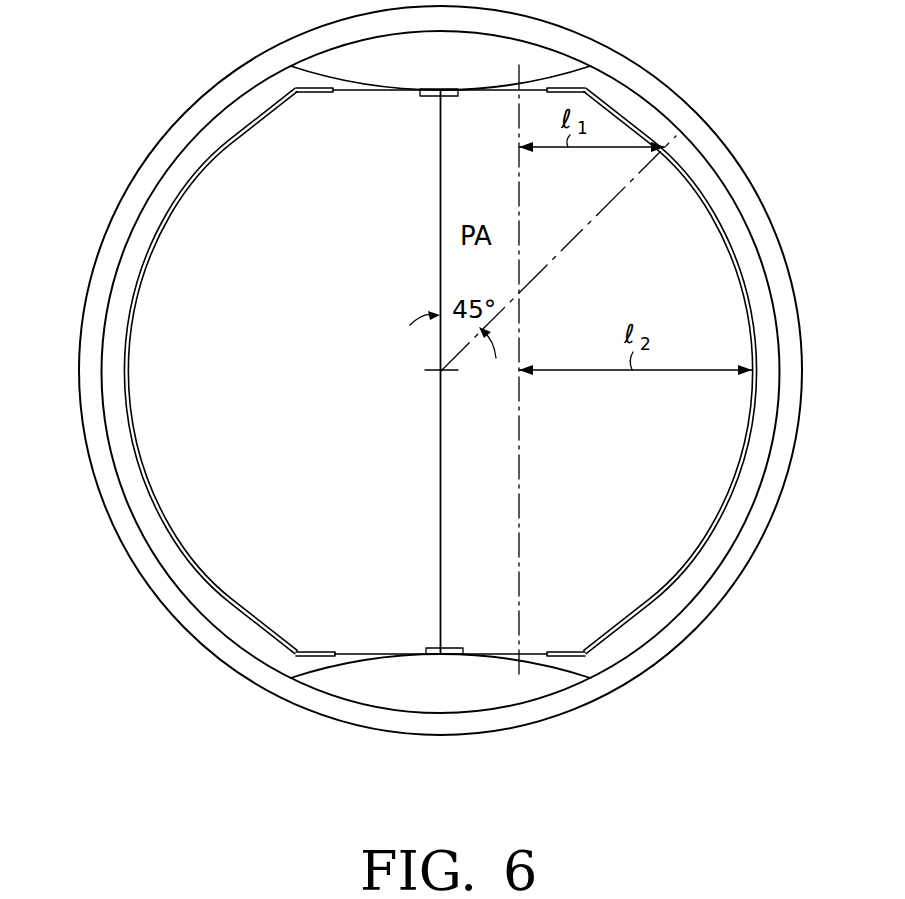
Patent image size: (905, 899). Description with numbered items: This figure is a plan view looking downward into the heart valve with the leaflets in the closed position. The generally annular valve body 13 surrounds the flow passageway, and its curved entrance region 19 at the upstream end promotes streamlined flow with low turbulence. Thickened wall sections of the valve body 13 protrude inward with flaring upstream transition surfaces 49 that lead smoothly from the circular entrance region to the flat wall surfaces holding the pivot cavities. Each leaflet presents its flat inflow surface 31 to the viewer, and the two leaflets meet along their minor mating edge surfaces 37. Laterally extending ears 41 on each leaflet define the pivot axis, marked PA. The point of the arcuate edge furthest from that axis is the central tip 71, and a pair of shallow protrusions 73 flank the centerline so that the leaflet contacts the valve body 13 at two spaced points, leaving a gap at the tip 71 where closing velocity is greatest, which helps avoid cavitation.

The valve body 13 is at (233, 73).
The curved entrance region 19 is at (150, 232).
The inflow surface 31 is at (313, 398).
The minor mating edge surface 37 is at (438, 188).
The ears 41 is at (370, 92).
The upstream transition surface 49 is at (456, 72).
The central tip 71 is at (127, 375).
The protrusions 73 is at (215, 147).